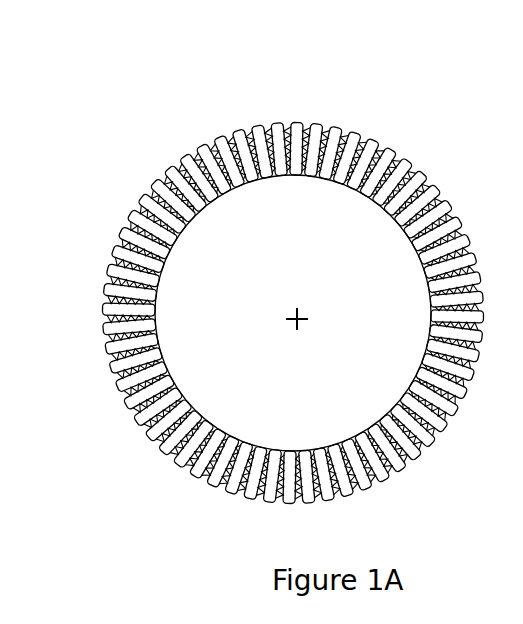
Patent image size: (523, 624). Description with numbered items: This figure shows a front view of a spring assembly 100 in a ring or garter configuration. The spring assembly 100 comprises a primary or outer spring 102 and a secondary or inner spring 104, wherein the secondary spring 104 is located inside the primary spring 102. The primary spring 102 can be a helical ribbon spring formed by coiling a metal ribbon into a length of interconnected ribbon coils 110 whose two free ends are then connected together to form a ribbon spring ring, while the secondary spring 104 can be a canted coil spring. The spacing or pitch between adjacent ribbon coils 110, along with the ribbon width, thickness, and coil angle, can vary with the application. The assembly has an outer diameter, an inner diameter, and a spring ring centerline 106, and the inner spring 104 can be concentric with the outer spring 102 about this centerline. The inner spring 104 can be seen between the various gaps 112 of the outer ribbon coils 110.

The spring assembly 100 is at (177, 105).
The primary spring 102 is at (363, 130).
The secondary spring 104 is at (438, 205).
The spring ring centerline 106 is at (293, 321).
The ribbon coils 110 is at (132, 215).
The gaps 112 is at (412, 455).